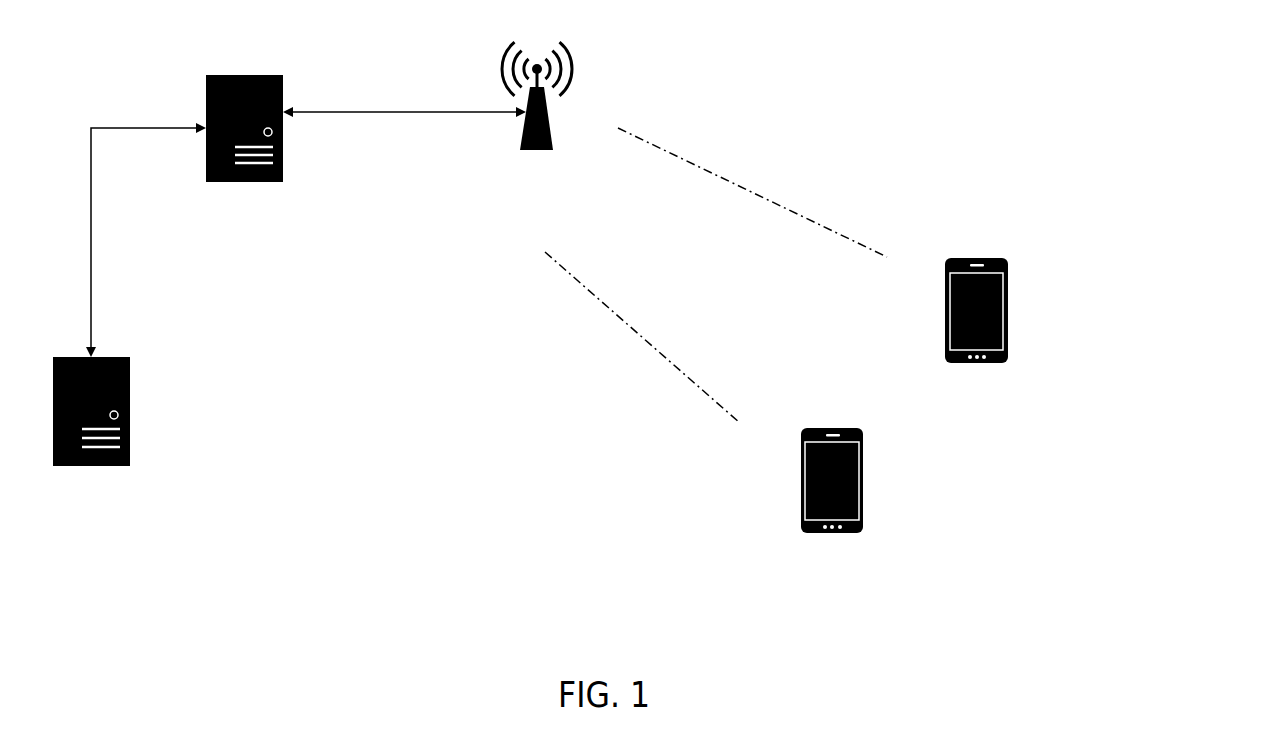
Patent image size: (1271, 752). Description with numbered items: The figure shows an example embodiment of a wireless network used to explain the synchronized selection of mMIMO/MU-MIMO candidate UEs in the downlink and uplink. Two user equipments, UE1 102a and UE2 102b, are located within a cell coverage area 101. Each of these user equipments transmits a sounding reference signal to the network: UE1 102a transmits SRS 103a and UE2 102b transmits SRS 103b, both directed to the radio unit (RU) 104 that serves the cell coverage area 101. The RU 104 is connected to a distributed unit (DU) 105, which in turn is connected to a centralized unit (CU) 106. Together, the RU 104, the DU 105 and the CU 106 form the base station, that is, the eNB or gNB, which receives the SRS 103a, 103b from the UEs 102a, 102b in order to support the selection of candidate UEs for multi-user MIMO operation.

The cell coverage area 101 is at (1062, 531).
The UE1 102a is at (832, 531).
The UE2 102b is at (975, 355).
The SRS 103a is at (642, 337).
The SRS 103b is at (752, 192).
The radio unit (RU) 104 is at (537, 145).
The distributed unit (DU) 105 is at (244, 187).
The centralized unit (CU) 106 is at (91, 461).